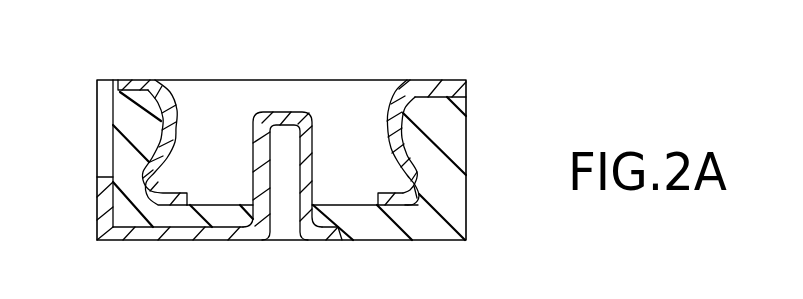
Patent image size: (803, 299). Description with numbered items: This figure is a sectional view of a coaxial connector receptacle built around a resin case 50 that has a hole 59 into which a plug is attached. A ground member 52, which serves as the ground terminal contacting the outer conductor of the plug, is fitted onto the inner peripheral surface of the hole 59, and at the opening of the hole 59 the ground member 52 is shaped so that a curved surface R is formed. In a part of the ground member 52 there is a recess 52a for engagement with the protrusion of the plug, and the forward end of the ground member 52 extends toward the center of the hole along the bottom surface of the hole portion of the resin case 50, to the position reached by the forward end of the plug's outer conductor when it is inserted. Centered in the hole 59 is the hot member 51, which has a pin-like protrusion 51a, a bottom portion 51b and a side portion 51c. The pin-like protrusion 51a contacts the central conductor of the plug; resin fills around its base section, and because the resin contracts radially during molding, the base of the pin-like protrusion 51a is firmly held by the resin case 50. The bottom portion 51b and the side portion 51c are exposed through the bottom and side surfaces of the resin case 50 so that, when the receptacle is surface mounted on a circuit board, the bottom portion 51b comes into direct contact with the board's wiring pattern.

The resin case 50 is at (457, 192).
The hot member 51 is at (198, 166).
The pin-like protrusion 51a is at (312, 128).
The bottom portion 51b is at (177, 240).
The side portion 51c is at (97, 205).
The ground member 52 is at (300, 111).
The recess 52a is at (400, 185).
The hole 59 is at (236, 98).
The curved surface R is at (166, 82).